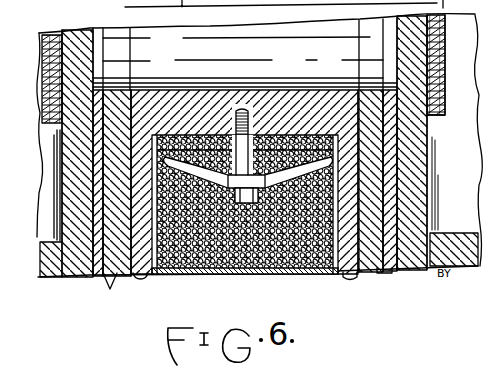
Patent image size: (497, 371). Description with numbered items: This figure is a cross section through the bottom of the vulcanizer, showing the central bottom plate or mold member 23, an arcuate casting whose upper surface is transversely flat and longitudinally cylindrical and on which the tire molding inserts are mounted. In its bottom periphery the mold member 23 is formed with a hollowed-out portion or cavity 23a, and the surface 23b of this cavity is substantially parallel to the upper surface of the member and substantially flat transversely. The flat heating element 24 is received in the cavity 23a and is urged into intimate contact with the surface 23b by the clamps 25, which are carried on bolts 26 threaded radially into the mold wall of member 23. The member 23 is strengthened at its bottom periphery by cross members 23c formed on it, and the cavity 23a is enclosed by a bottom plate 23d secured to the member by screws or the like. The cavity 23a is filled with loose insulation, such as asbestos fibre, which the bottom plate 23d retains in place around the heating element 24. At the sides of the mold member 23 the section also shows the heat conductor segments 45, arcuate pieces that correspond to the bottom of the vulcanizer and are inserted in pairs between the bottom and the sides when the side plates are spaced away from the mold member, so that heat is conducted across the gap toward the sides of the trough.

The central bottom plate or mold member 23 is at (320, 100).
The hollowed-out portion or cavity 23a is at (362, 271).
The surface of the hollowed-out portion 23b is at (275, 134).
The cross members 23c is at (277, 266).
The bottom plate 23d is at (239, 252).
The heating element 24 is at (192, 135).
The clamps 25 is at (181, 254).
The bolts 26 is at (251, 110).
The heat conductor segments 45 is at (110, 289).